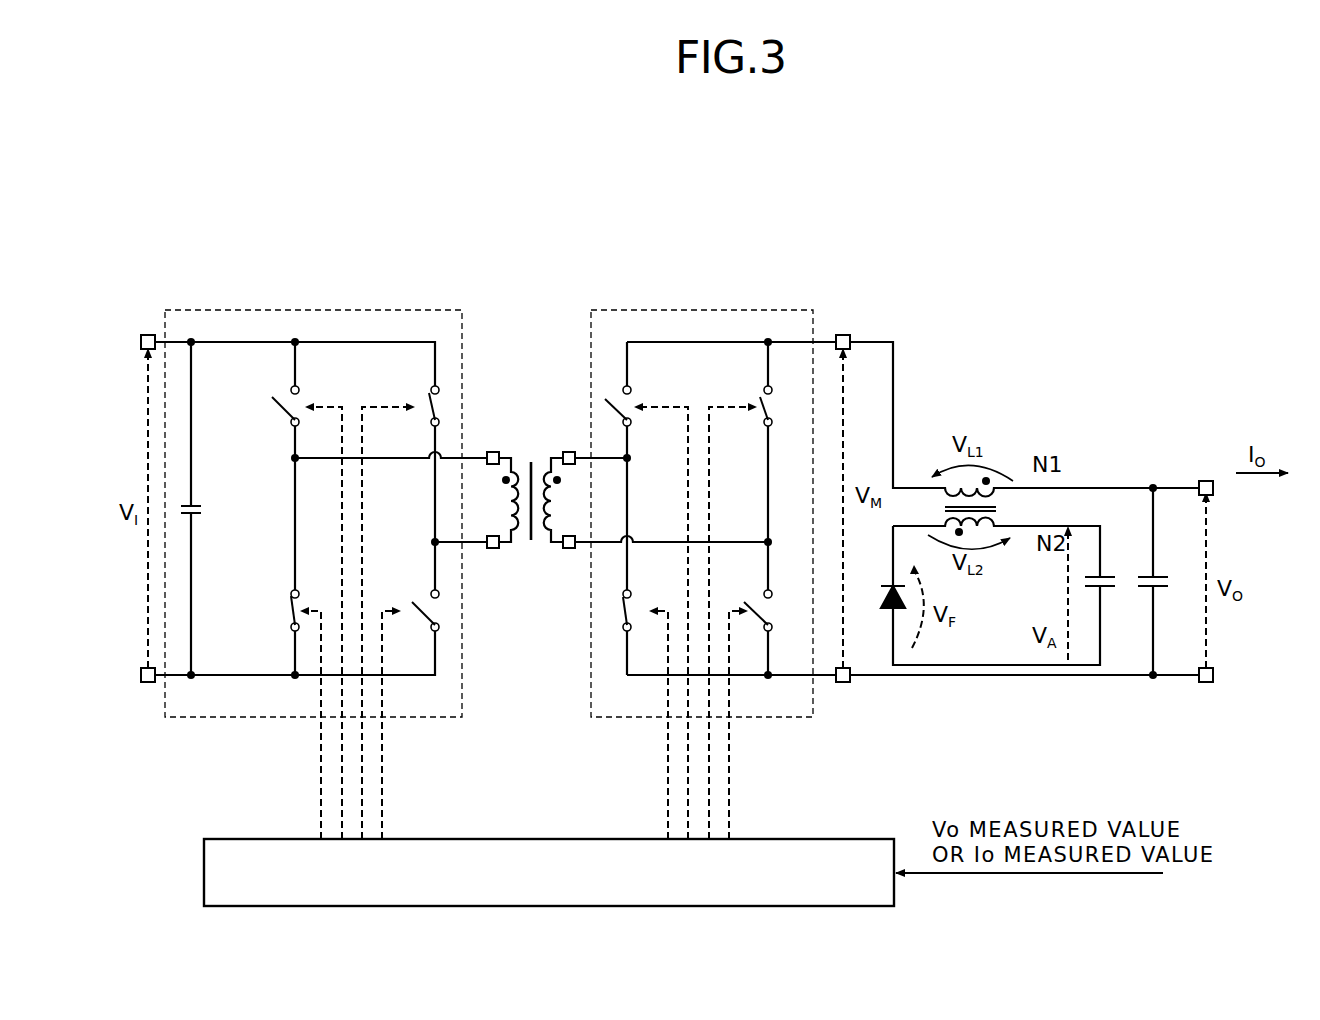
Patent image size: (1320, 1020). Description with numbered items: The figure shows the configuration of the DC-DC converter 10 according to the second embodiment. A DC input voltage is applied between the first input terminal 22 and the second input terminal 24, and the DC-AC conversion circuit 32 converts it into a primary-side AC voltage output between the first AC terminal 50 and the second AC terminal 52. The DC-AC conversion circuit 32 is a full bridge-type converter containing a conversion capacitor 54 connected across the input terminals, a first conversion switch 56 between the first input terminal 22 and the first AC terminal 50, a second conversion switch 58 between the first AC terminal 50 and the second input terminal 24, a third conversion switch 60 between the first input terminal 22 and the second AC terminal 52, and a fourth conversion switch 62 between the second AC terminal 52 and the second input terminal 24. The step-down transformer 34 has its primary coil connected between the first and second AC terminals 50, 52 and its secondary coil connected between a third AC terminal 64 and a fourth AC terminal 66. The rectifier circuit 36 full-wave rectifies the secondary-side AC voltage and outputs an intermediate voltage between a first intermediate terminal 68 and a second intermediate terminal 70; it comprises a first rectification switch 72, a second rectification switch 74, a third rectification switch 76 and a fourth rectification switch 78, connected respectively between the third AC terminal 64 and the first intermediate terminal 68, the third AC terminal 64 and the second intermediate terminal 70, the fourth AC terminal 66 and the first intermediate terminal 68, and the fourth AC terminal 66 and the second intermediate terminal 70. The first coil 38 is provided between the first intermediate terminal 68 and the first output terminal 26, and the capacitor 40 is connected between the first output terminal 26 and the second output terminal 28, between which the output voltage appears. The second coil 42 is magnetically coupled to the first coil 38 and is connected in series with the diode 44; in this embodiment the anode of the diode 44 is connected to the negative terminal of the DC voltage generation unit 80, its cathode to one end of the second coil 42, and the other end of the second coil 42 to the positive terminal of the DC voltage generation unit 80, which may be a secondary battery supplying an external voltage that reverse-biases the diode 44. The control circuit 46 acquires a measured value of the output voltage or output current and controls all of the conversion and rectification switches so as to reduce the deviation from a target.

The DC-DC converter 10 is at (866, 199).
The first input terminal 22 is at (147, 334).
The second input terminal 24 is at (147, 683).
The first output terminal 26 is at (1206, 480).
The second output terminal 28 is at (1206, 683).
The DC-AC conversion circuit 32 is at (312, 310).
The transformer 34 is at (531, 460).
The rectifier circuit 36 is at (709, 310).
The first coil 38 is at (958, 486).
The capacitor 40 is at (1156, 582).
The second coil 42 is at (988, 531).
The diode 44 is at (898, 612).
The control circuit 46 is at (248, 839).
The first AC terminal 50 is at (493, 451).
The second AC terminal 52 is at (493, 549).
The conversion capacitor 54 is at (204, 507).
The first conversion switch 56 is at (273, 400).
The second conversion switch 58 is at (292, 607).
The third conversion switch 60 is at (431, 394).
The fourth conversion switch 62 is at (420, 605).
The third AC terminal 64 is at (569, 451).
The fourth AC terminal 66 is at (569, 549).
The first intermediate terminal 68 is at (843, 334).
The second intermediate terminal 70 is at (843, 683).
The first rectification switch 72 is at (608, 406).
The second rectification switch 74 is at (632, 612).
The third rectification switch 76 is at (761, 397).
The fourth rectification switch 78 is at (746, 612).
The DC voltage generation unit 80 is at (1103, 574).